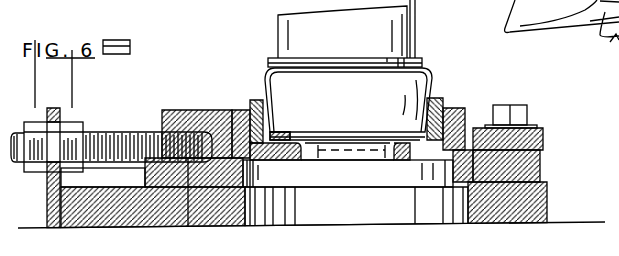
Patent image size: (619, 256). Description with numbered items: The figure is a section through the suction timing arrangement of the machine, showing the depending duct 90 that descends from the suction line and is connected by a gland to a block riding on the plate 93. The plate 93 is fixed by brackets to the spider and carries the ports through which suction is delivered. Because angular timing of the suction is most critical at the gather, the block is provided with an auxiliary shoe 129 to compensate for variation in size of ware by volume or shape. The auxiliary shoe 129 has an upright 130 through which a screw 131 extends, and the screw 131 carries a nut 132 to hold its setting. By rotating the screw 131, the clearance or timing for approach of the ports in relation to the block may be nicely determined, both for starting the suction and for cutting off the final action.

The depending duct 90 is at (282, 35).
The plate 93 is at (545, 198).
The auxiliary shoe 129 is at (300, 208).
The upright 130 is at (62, 116).
The screw 131 is at (140, 119).
The nut 132 is at (80, 178).